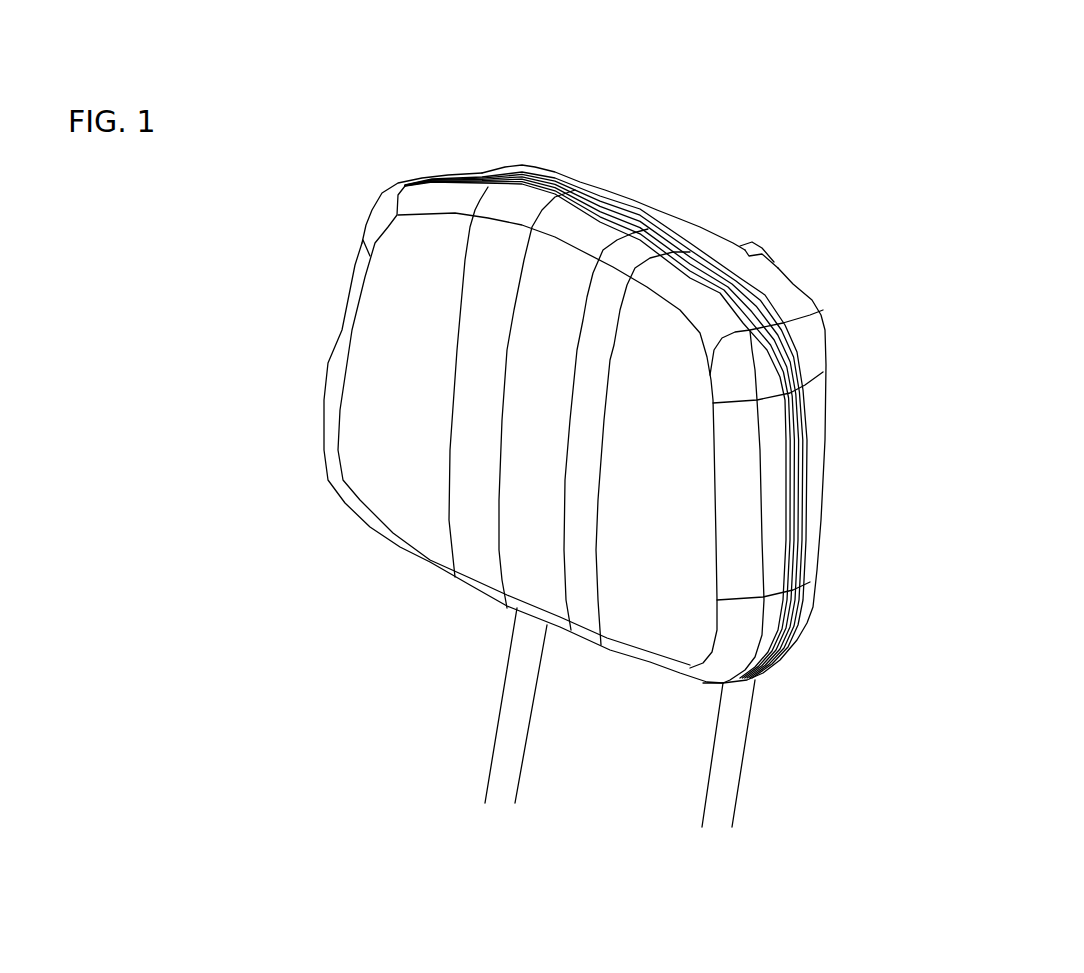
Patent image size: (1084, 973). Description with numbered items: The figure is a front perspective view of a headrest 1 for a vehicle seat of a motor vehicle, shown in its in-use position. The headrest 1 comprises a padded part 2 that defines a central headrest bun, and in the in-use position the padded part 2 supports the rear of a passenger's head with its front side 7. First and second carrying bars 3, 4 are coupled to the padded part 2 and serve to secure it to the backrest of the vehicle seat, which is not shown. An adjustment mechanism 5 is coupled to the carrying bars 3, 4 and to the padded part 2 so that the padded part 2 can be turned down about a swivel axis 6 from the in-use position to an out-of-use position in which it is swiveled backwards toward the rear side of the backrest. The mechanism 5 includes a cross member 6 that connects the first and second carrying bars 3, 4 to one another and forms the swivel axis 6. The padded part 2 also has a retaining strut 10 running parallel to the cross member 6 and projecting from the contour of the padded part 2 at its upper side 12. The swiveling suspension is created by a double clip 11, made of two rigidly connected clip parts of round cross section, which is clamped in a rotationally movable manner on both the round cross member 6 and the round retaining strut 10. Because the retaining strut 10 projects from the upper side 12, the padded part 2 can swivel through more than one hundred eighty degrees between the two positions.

The headrest 1 is at (301, 564).
The padded part 2 is at (388, 210).
The first carrying bar 3 is at (503, 707).
The second carrying bar 4 is at (720, 743).
The adjustment mechanism 5 is at (683, 188).
The cross member 6 is at (747, 240).
The front side 7 is at (417, 417).
The retaining strut 10 is at (710, 213).
The double clip 11 is at (640, 210).
The upper side 12 is at (437, 173).